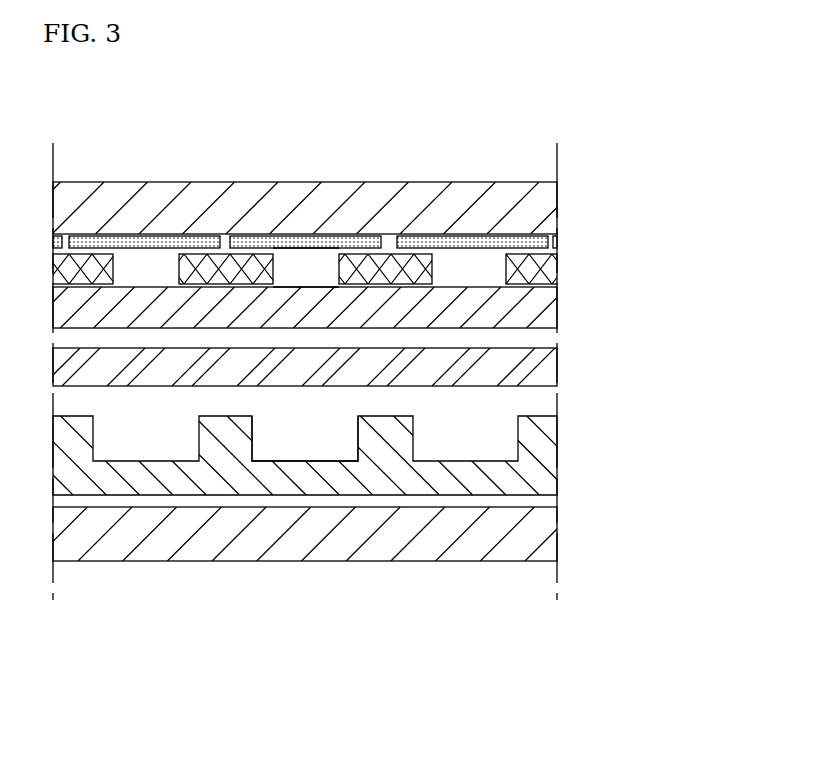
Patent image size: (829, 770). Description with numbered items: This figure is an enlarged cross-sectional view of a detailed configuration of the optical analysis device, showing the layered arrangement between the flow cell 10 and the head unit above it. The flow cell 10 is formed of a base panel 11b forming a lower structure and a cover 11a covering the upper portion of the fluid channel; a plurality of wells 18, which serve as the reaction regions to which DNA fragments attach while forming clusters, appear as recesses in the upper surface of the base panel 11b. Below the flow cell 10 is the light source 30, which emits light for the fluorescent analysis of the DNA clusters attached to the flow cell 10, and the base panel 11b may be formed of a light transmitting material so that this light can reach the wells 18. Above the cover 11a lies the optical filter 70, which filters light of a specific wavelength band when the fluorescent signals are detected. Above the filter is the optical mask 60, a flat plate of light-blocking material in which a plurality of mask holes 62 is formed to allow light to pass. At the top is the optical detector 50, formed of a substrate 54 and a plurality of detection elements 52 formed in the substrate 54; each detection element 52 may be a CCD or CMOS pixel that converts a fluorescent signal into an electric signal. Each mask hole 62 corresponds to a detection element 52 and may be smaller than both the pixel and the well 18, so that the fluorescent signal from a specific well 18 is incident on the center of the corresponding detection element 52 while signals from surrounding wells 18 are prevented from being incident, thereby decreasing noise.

The flow cell 10 is at (580, 439).
The cover 11a is at (557, 355).
The base panel 11b is at (542, 478).
The well 18 is at (304, 442).
The light source 30 is at (584, 541).
The optical detector 50 is at (566, 203).
The detection element 52 is at (313, 236).
The substrate 54 is at (455, 200).
The optical mask 60 is at (566, 270).
The mask hole 62 is at (302, 268).
The optical filter 70 is at (566, 308).